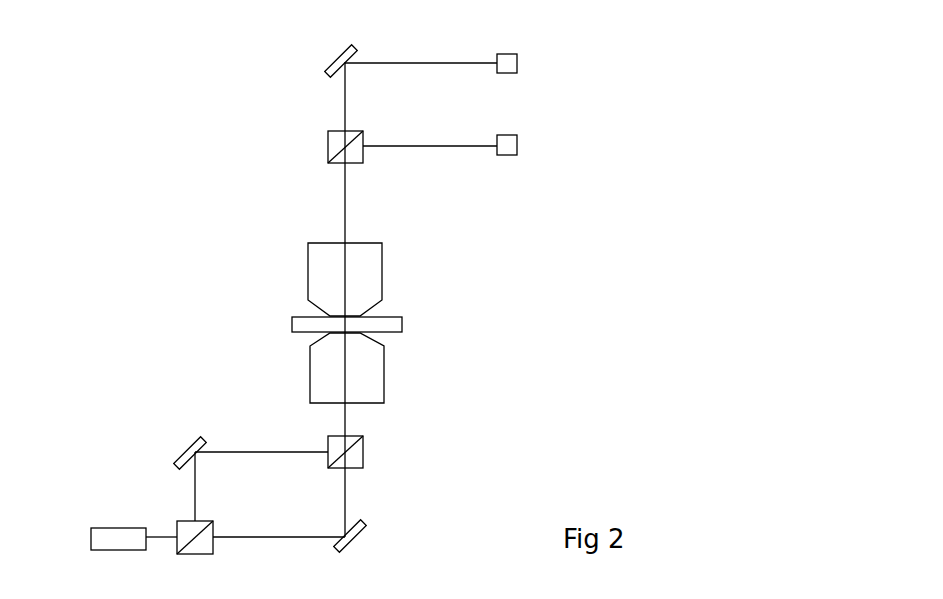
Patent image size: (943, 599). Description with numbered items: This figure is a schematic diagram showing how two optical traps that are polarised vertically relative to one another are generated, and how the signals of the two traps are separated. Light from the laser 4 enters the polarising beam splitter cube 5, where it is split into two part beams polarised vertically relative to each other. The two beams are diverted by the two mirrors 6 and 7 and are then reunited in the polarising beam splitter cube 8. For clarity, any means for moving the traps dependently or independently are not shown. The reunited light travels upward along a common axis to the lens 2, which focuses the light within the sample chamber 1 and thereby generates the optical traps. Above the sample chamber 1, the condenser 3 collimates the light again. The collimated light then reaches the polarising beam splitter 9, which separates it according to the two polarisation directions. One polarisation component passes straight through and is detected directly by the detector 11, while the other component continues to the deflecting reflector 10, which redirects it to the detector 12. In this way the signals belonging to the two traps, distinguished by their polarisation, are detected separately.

The sample chamber 1 is at (297, 325).
The lens 2 is at (320, 388).
The condenser 3 is at (316, 276).
The laser 4 is at (100, 538).
The polarising beam splitter cube 5 is at (183, 527).
The mirror 6 is at (184, 451).
The mirror 7 is at (358, 537).
The polarising beam splitter cube 8 is at (357, 452).
The polarising beam splitter 9 is at (330, 147).
The deflecting reflector 10 is at (334, 57).
The detector 11 is at (517, 146).
The detector 12 is at (517, 63).